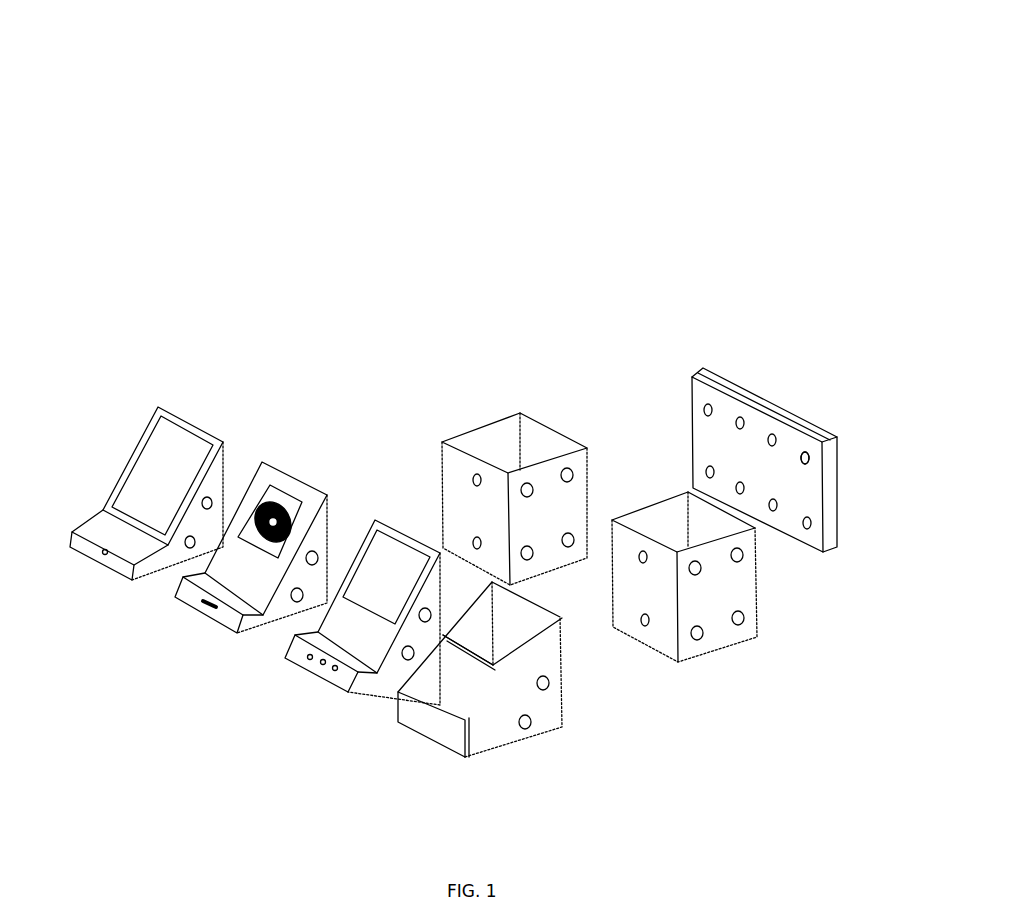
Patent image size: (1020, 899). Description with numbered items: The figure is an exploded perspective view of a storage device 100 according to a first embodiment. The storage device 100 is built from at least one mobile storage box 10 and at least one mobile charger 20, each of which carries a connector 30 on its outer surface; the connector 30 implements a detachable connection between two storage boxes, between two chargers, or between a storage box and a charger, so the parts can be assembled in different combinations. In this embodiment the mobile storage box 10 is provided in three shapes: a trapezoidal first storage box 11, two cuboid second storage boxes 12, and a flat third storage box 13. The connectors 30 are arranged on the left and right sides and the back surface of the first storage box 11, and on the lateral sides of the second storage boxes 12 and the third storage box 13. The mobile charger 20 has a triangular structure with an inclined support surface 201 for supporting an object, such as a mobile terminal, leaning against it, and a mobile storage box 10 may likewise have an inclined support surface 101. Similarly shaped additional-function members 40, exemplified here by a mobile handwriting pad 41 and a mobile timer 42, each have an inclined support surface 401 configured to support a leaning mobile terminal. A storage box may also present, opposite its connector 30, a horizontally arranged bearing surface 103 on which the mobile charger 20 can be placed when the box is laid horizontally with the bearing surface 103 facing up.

The storage device 100 is at (62, 60).
The mobile storage box 10 is at (855, 690).
The first storage box 11 is at (497, 745).
The second storage box 12 is at (693, 653).
The third storage box 13 is at (790, 530).
The inclined support surface 101 is at (450, 650).
The bearing surface 103 is at (810, 382).
The mobile charger 20 is at (296, 480).
The inclined support surface 201 is at (306, 520).
The connector 30 is at (565, 468).
The additional-function member 40 is at (237, 800).
The mobile handwriting pad 41 is at (108, 568).
The mobile timer 42 is at (322, 672).
The inclined support surface 401 is at (163, 468).